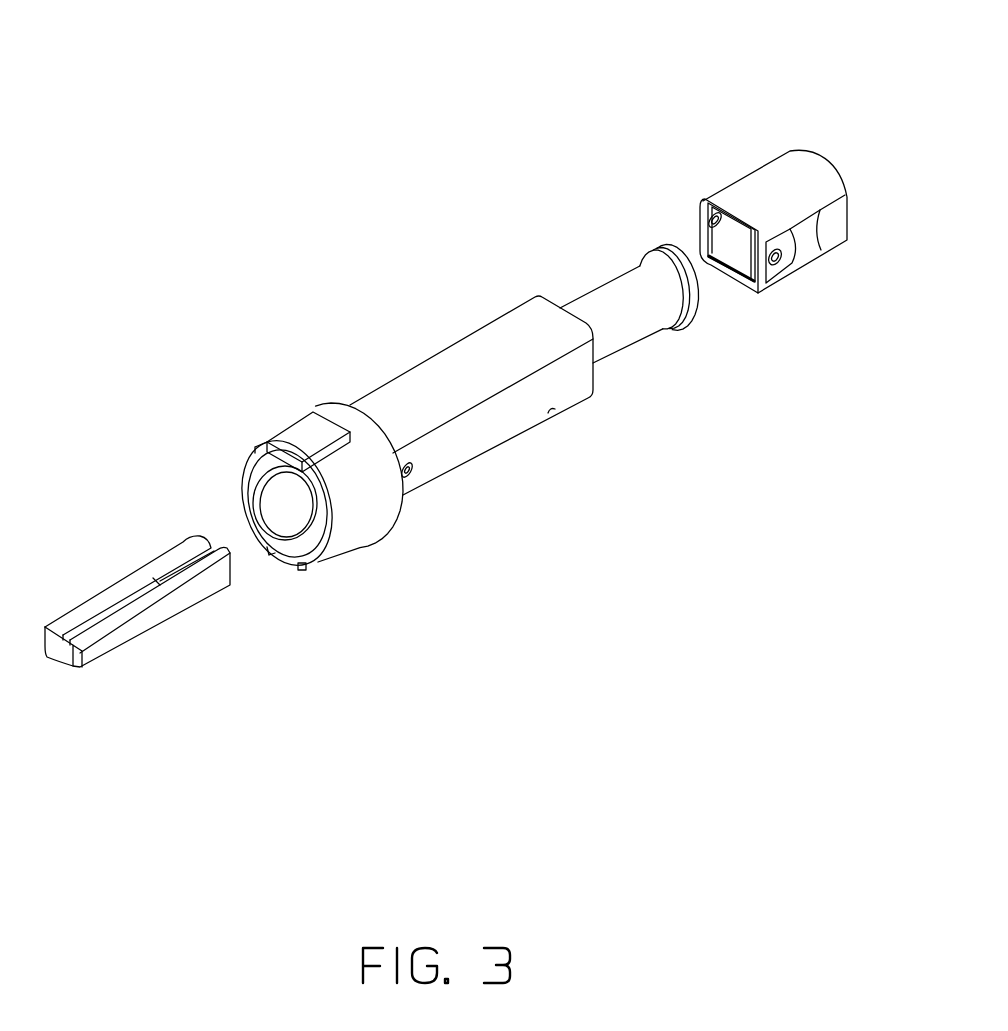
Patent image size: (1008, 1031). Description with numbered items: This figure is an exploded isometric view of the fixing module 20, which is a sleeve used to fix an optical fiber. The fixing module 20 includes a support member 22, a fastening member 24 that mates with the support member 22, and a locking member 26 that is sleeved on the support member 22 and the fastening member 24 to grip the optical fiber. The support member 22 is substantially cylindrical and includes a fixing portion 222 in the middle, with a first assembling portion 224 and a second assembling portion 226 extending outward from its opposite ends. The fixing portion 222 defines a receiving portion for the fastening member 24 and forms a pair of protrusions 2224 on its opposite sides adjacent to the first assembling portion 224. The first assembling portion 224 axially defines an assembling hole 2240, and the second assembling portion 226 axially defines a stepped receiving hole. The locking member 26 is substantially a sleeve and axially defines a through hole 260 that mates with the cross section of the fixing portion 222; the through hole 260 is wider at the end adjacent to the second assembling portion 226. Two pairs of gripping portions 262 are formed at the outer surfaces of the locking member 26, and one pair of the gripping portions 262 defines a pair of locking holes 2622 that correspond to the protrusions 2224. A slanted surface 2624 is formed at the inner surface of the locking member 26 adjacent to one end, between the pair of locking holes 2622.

The fixing module 20 is at (384, 56).
The support member 22 is at (426, 344).
The fixing portion 222 is at (503, 420).
The first assembling portion 224 is at (370, 503).
The second assembling portion 226 is at (620, 332).
The protrusions 2224 is at (413, 472).
The assembling hole 2240 is at (282, 493).
The fastening member 24 is at (152, 645).
The locking member 26 is at (739, 155).
The through hole 260 is at (720, 238).
The gripping portions 262 is at (833, 230).
The locking holes 2622 is at (710, 219).
The slanted surface 2624 is at (745, 272).